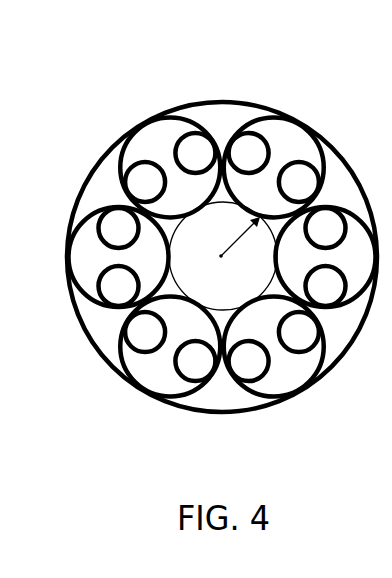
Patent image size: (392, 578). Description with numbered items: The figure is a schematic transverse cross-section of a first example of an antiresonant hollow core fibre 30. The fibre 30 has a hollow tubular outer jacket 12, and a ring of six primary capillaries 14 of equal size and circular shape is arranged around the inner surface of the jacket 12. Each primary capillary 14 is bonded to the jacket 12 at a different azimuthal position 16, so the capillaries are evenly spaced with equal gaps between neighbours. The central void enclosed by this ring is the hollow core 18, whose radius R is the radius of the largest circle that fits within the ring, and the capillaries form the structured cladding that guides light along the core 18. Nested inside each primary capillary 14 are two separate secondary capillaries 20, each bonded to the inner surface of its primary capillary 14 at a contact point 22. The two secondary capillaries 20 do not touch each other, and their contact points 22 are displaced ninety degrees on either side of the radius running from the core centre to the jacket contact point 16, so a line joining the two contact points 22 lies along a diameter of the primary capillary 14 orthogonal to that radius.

The fibre 30 is at (122, 100).
The outer jacket 12 is at (102, 356).
The primary capillaries 14 is at (88, 213).
The azimuthal position 16 is at (147, 394).
The hollow core 18 is at (211, 252).
The secondary capillary 20 is at (302, 160).
The contact point 22 is at (128, 320).